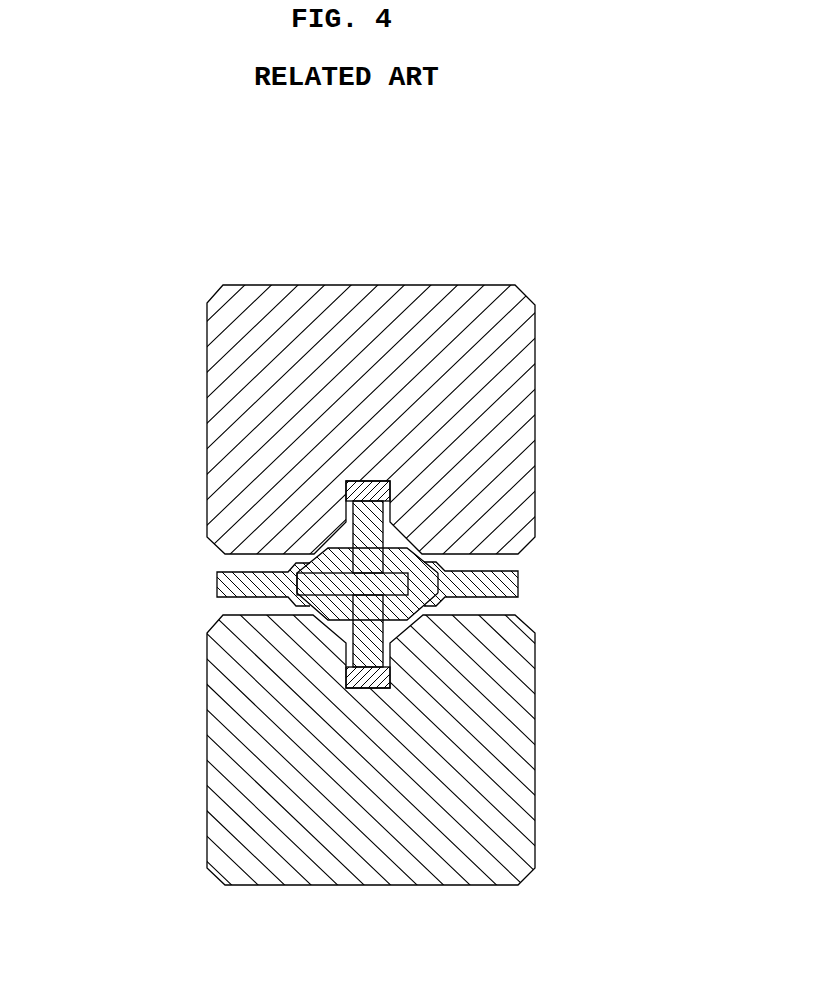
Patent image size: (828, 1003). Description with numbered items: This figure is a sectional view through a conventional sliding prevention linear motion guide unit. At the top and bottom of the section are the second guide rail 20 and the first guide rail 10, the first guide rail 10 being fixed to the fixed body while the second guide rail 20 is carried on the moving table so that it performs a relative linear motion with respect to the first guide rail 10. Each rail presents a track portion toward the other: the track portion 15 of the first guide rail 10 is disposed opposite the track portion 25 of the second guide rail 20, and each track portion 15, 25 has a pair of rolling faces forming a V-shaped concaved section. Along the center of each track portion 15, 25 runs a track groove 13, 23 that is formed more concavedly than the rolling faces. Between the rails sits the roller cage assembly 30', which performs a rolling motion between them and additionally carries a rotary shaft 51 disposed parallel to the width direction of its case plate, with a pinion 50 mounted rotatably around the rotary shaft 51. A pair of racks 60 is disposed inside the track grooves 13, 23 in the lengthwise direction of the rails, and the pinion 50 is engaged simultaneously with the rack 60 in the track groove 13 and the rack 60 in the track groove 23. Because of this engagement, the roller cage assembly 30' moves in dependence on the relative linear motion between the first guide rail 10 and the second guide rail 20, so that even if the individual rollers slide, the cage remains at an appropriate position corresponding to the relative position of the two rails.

The first guide rail 10 is at (372, 868).
The second guide rail 20 is at (430, 298).
The roller cage assembly 30' is at (301, 577).
The rack 60 is at (367, 582).
The track groove 23 is at (390, 500).
The track groove 13 is at (390, 678).
The pinion 50 is at (386, 541).
The track portion 25 is at (318, 548).
The track portion 15 is at (330, 621).
The rotary shaft 51 is at (436, 612).